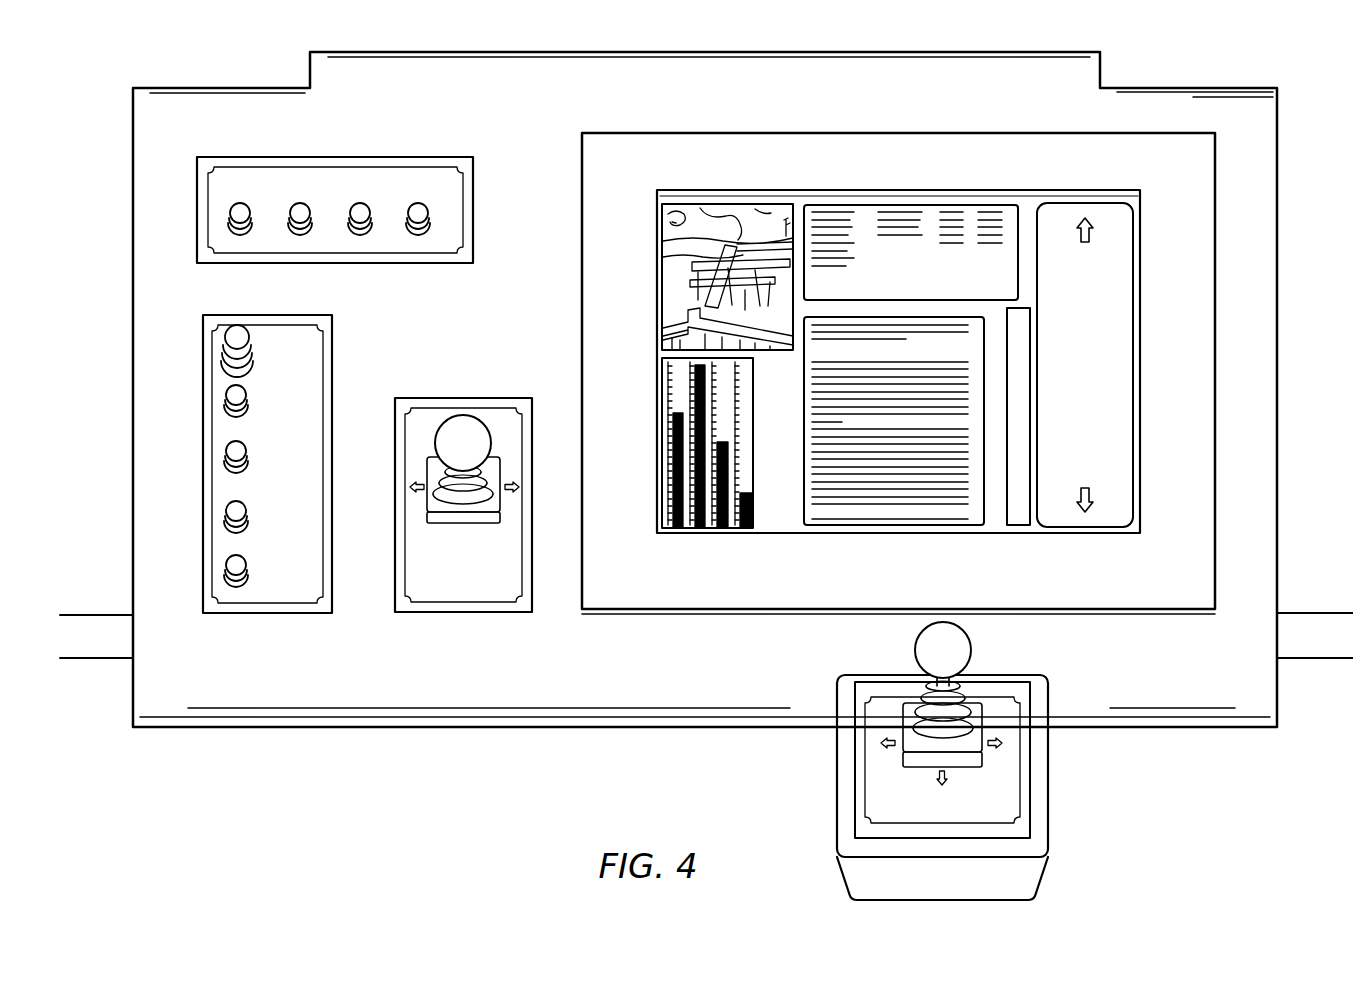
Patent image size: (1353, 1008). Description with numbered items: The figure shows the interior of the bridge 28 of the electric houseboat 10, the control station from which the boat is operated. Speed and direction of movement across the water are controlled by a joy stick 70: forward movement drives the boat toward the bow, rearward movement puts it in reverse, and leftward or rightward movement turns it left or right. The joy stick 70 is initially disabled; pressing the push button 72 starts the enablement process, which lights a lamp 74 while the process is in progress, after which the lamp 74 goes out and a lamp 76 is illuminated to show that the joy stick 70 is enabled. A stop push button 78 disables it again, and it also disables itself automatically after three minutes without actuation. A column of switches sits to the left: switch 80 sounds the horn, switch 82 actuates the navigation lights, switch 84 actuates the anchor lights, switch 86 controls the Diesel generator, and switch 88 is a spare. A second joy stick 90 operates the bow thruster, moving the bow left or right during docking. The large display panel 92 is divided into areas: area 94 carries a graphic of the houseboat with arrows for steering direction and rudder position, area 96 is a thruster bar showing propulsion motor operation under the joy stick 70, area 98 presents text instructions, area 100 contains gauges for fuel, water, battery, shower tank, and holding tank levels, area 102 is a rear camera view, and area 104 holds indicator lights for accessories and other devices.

The electric houseboat 10 is at (332, 811).
The bridge 28 is at (1279, 136).
The joy stick 70 is at (972, 646).
The push button 72 is at (230, 207).
The lamp 74 is at (300, 204).
The lamp 76 is at (360, 204).
The stop push button 78 is at (418, 204).
The switch 80 is at (223, 350).
The switch 82 is at (225, 398).
The switch 84 is at (225, 455).
The switch 86 is at (225, 514).
The switch 88 is at (225, 569).
The joy stick 90 is at (462, 415).
The display panel 92 is at (781, 500).
The area 94 is at (1134, 365).
The area 96 is at (1020, 527).
The area 98 is at (858, 527).
The area 100 is at (661, 446).
The area 102 is at (661, 278).
The area 104 is at (866, 205).